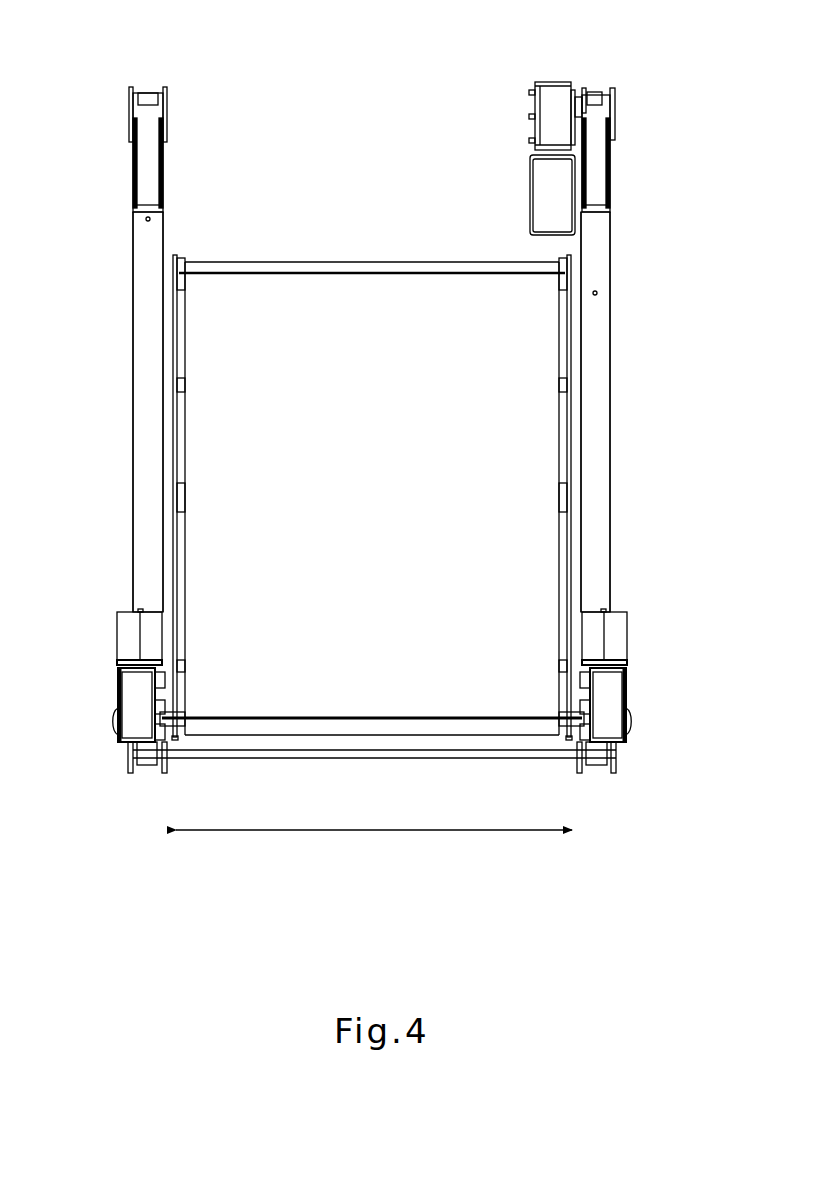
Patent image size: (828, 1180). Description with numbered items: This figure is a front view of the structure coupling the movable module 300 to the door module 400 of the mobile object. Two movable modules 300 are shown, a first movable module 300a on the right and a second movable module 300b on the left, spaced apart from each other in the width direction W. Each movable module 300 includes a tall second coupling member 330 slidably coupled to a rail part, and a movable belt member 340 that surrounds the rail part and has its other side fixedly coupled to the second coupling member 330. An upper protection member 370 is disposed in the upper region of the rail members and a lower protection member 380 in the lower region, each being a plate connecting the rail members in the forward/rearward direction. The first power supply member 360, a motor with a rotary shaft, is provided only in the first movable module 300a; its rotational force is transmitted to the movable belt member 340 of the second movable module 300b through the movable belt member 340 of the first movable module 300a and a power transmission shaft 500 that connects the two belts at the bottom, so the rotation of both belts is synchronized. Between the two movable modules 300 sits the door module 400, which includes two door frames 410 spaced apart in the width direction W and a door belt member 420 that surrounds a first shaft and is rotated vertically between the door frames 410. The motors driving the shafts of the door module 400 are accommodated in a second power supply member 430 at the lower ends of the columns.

The movable module 300 is at (352, 14).
The first movable module 300a is at (672, 100).
The second movable module 300b is at (70, 160).
The second coupling member 330 is at (148, 460).
The movable belt member 340 is at (147, 201).
The first power supply member 360 is at (552, 97).
The upper protection member 370 is at (165, 130).
The lower protection member 380 is at (126, 768).
The door module 400 is at (305, 246).
The door frames 410 is at (174, 538).
The door belt member 420 is at (540, 340).
The second power supply member 430 is at (607, 695).
The power transmission shaft 500 is at (336, 760).
The width direction W is at (372, 831).